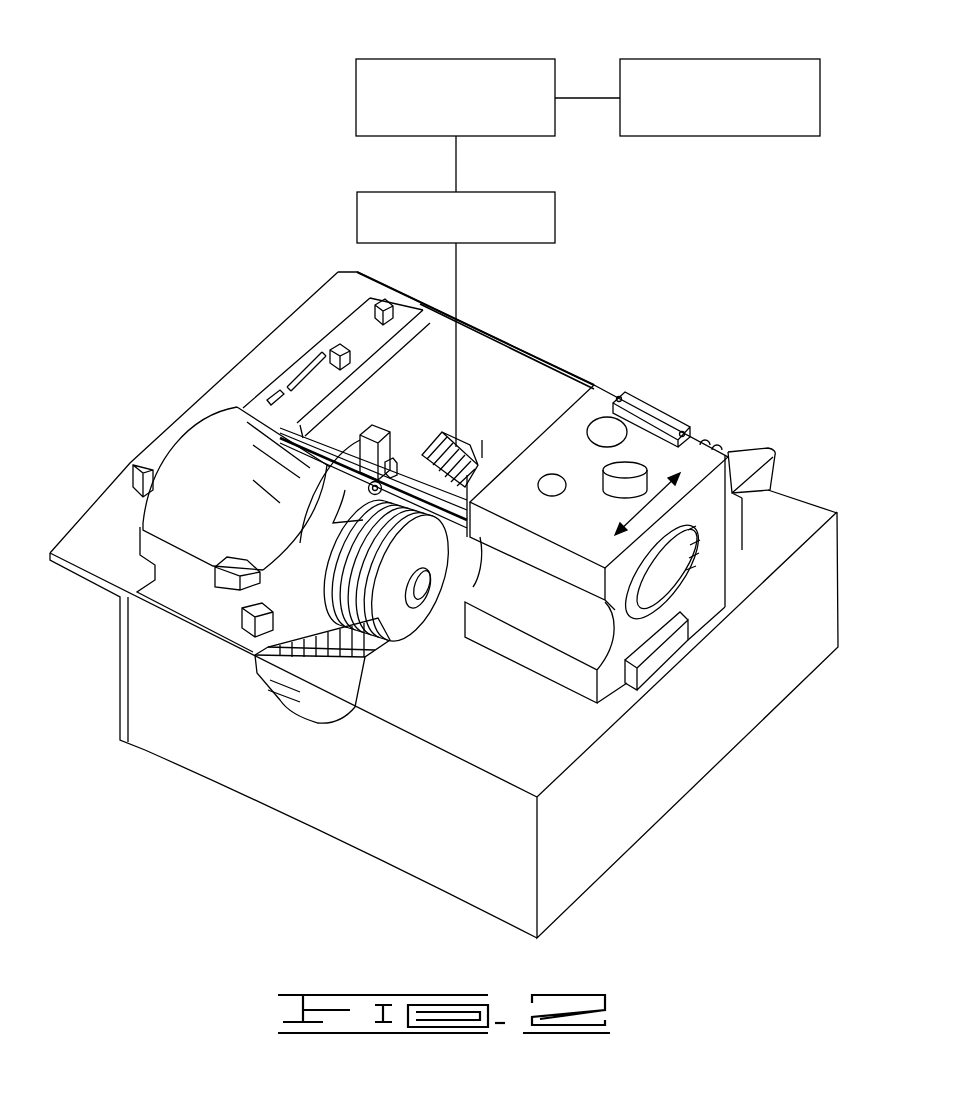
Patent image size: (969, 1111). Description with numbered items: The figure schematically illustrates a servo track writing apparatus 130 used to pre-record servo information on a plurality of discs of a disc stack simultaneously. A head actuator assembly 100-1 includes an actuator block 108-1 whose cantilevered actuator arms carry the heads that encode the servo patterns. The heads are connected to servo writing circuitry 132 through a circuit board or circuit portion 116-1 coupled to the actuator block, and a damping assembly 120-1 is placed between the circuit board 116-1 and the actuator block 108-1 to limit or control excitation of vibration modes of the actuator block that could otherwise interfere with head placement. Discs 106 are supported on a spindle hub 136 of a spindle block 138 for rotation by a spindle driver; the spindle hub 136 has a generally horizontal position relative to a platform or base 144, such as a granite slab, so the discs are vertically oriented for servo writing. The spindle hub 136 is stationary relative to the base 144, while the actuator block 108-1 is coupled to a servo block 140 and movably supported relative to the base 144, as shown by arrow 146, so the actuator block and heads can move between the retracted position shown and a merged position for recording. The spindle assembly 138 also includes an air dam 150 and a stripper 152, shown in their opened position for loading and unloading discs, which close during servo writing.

The circuit board or circuit portion 116-1 is at (437, 58).
The servo writing circuitry 132 is at (703, 58).
The damping assembly 120-1 is at (538, 192).
The actuator block 108-1 is at (470, 445).
The servo track writing apparatus 130 is at (664, 345).
The head actuator assembly 100-1 is at (437, 425).
The servo block 140 is at (585, 459).
The spindle block 138 is at (235, 506).
The arrow 146 is at (657, 508).
The discs 106 is at (423, 553).
The stripper 152 is at (475, 597).
The spindle hub 136 is at (418, 600).
The platform or base 144 is at (700, 727).
The air dam 150 is at (330, 707).